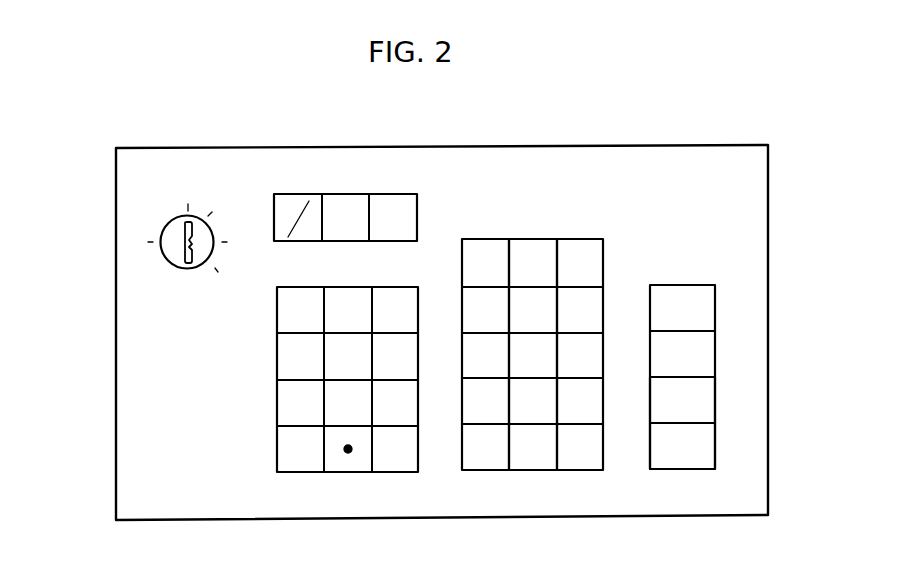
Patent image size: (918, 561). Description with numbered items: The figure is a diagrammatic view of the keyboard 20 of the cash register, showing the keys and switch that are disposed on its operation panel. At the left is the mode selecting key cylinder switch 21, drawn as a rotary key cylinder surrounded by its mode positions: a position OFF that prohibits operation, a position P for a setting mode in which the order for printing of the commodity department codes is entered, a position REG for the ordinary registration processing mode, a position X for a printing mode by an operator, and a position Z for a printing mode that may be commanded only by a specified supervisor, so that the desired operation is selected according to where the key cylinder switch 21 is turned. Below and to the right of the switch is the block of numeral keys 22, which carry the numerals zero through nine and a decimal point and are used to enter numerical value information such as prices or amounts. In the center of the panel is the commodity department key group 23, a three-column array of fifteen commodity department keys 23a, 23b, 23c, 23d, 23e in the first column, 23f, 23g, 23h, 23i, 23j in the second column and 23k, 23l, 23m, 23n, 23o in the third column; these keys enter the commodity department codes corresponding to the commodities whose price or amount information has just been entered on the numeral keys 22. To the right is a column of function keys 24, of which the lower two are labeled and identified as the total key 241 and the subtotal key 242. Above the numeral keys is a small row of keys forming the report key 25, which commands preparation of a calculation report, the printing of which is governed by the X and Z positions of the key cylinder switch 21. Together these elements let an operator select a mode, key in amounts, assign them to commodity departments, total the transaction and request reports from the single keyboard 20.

The keyboard 20 is at (712, 123).
The mode selecting key cylinder switch 21 is at (177, 273).
The numeral keys 22 is at (270, 397).
The commodity department key group 23 is at (569, 231).
The commodity department key 23a is at (468, 440).
The commodity department key 23b is at (468, 394).
The commodity department key 23c is at (468, 349).
The commodity department key 23d is at (468, 310).
The commodity department key 23e is at (467, 262).
The commodity department key 23f is at (537, 465).
The commodity department key 23g is at (543, 415).
The commodity department key 23h is at (520, 350).
The commodity department key 23i is at (523, 302).
The commodity department key 23j is at (532, 250).
The commodity department key 23k is at (594, 463).
The commodity department key 23l is at (594, 415).
The commodity department key 23m is at (594, 370).
The commodity department key 23n is at (594, 323).
The commodity department key 23o is at (594, 277).
The function keys 24 is at (690, 275).
The total key 241 is at (707, 458).
The subtotal key 242 is at (707, 411).
The report key 25 is at (311, 196).